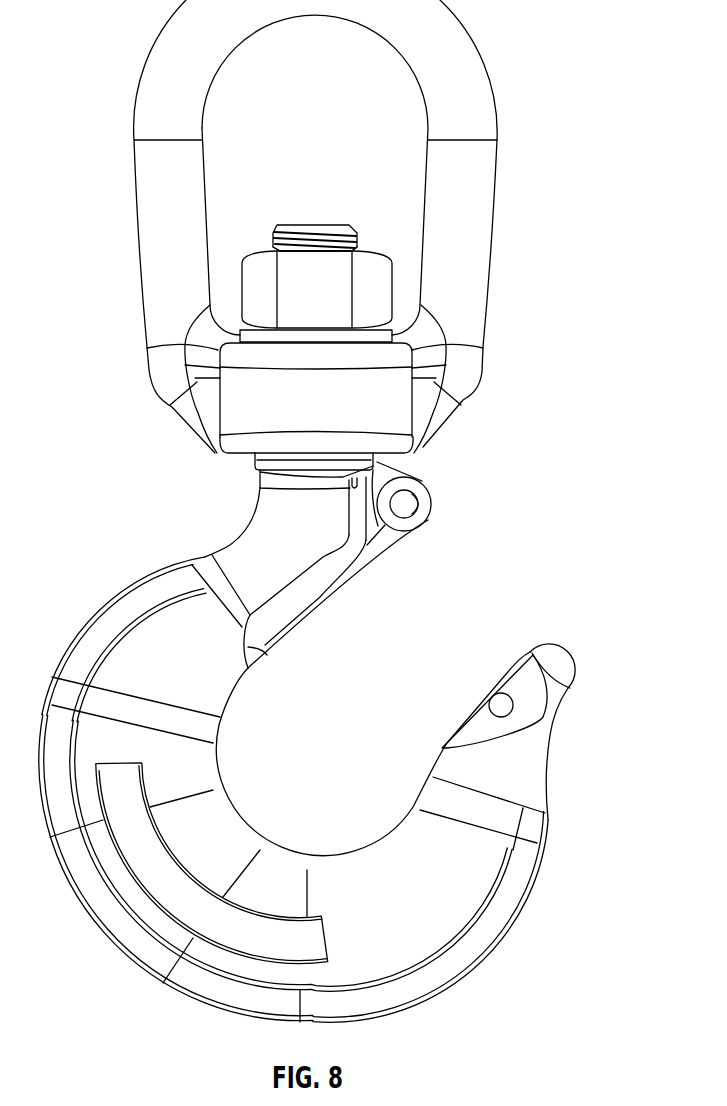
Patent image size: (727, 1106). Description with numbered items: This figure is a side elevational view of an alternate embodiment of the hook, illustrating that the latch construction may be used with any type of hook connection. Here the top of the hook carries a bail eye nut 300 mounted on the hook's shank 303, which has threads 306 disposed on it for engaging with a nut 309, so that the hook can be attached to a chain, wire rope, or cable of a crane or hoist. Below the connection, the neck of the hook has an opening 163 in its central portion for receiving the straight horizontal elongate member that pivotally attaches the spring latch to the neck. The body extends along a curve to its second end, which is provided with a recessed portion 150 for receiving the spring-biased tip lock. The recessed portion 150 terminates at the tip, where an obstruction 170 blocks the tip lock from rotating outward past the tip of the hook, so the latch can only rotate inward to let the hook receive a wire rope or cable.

The bail eye nut 300 is at (455, 50).
The shank 303 is at (318, 230).
The threads 306 is at (276, 244).
The nut 309 is at (252, 283).
The opening 163 is at (415, 517).
The recessed portion 150 is at (513, 682).
The obstruction 170 is at (540, 672).